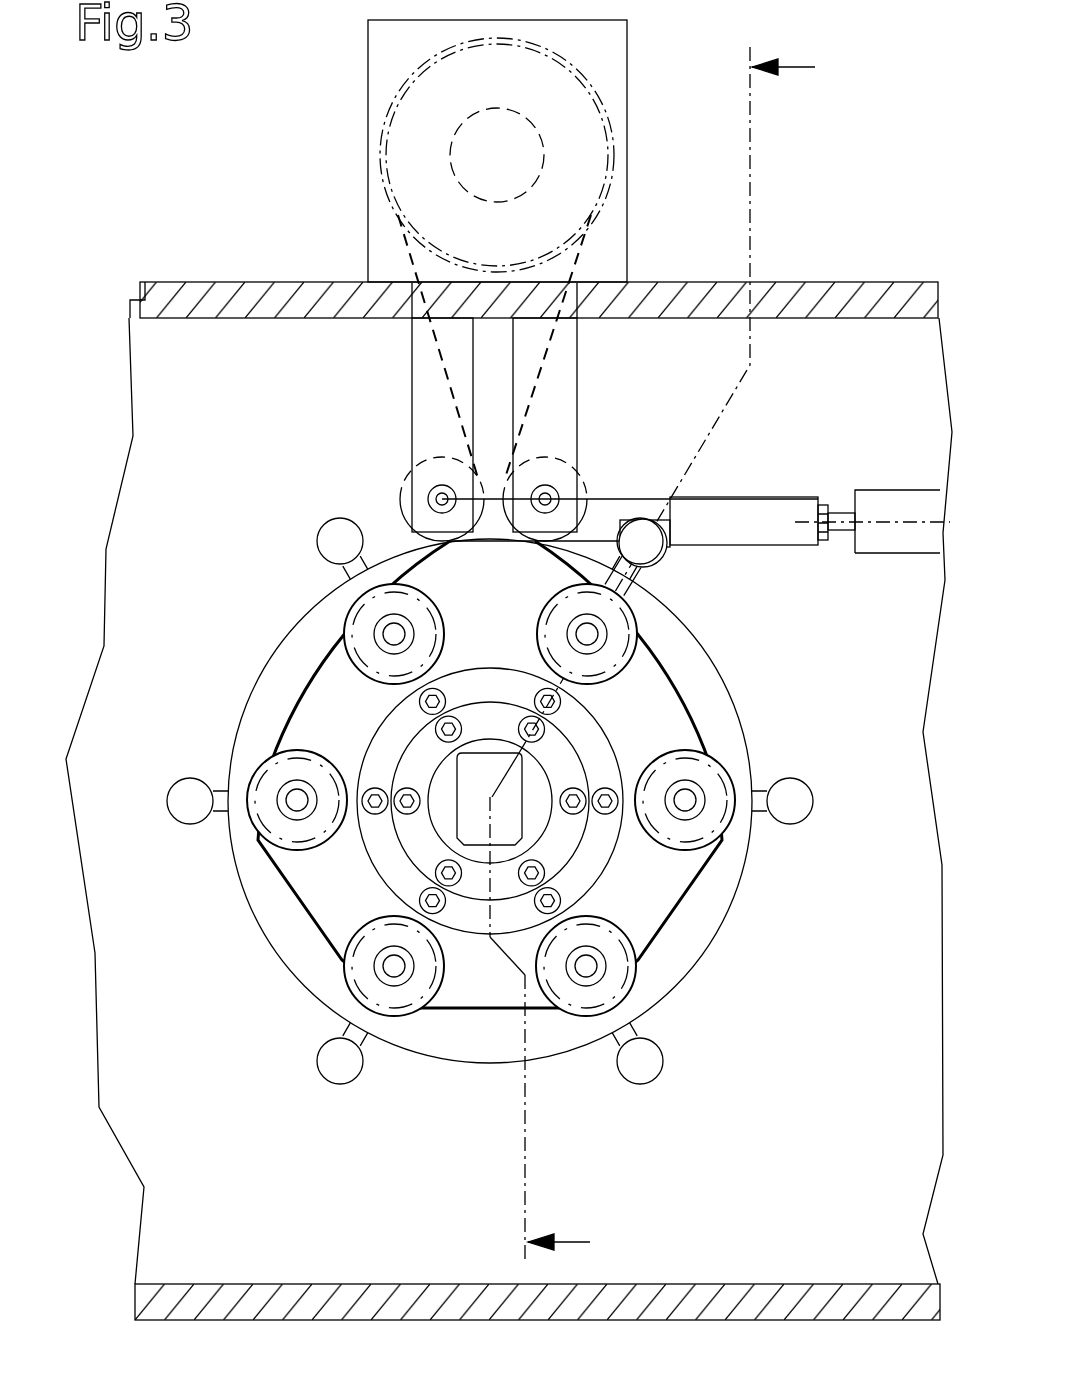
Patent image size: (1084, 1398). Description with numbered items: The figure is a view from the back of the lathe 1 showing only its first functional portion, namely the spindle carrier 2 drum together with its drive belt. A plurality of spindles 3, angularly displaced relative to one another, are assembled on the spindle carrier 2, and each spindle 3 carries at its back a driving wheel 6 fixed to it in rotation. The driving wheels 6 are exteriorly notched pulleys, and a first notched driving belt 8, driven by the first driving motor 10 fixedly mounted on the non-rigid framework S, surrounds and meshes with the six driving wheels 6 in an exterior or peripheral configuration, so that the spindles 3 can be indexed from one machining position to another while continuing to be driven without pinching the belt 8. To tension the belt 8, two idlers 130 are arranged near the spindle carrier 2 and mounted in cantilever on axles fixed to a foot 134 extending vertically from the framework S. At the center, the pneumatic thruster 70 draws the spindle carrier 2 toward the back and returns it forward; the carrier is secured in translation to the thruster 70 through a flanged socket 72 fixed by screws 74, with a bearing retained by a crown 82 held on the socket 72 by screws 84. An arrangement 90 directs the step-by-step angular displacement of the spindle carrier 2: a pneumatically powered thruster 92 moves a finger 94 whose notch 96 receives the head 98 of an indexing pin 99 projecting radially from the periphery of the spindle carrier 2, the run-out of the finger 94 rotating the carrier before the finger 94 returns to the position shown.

The lathe 1 is at (204, 258).
The spindle carrier 2 is at (303, 955).
The spindles 3 is at (285, 830).
The driving wheels 6 is at (273, 753).
The first notched driving belt 8 is at (322, 672).
The first driving motor 10 is at (605, 65).
The thruster 70 is at (512, 790).
The flanged socket 72 is at (388, 859).
The screws 74 is at (607, 812).
The crown 82 is at (477, 877).
The screws 84 is at (578, 815).
The arrangement 90 is at (884, 470).
The thruster 92 is at (917, 508).
The finger 94 is at (772, 515).
The notch 96 is at (663, 553).
The head 98 is at (657, 560).
The indexing pin 99 is at (647, 570).
The idlers 130 is at (405, 498).
The foot 134 is at (435, 430).
The non-rigid framework S is at (858, 310).